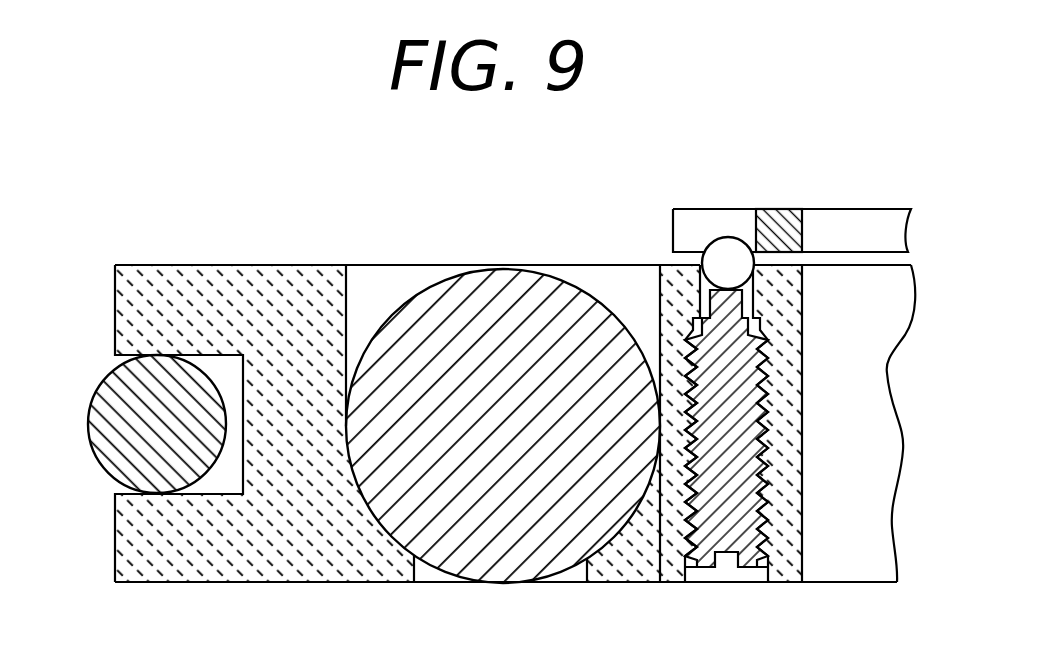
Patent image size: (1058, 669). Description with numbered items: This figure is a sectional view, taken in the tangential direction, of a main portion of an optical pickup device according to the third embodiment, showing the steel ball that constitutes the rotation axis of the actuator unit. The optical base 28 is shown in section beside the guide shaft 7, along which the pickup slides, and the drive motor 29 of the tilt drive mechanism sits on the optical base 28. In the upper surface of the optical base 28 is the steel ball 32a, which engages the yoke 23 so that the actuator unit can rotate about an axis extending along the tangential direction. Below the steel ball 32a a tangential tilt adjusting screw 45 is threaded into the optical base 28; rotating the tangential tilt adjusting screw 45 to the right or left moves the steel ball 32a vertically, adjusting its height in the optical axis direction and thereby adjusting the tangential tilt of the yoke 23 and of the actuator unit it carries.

The guide shaft 7 is at (110, 418).
The yoke 23 is at (780, 225).
The optical base 28 is at (180, 283).
The drive motor 29 is at (463, 292).
The steel ball 32a is at (722, 252).
The tangential tilt adjusting screw 45 is at (728, 534).